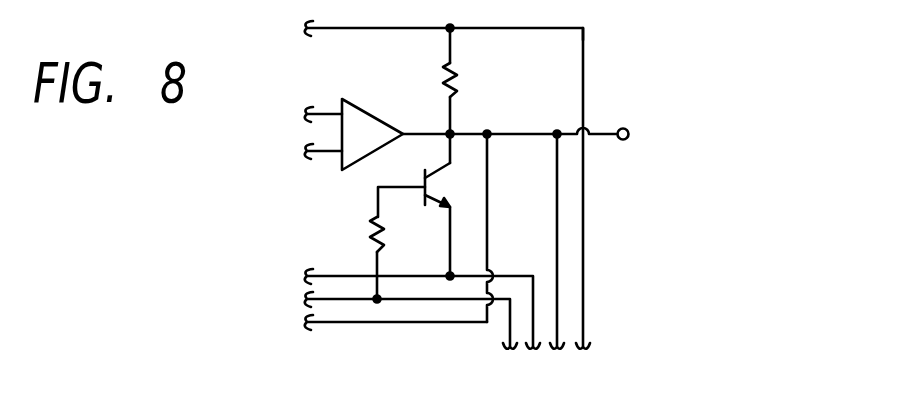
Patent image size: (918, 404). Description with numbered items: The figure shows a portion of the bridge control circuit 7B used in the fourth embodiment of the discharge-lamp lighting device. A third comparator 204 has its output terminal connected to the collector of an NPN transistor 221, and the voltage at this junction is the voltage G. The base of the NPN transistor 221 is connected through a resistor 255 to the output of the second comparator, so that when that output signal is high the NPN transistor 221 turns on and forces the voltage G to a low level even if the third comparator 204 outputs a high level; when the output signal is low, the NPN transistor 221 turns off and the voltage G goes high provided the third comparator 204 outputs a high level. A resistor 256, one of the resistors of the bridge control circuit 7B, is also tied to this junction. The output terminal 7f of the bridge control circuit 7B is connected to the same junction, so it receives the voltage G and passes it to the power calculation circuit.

The third comparator 204 is at (385, 120).
The resistor 256 is at (470, 81).
The resistor 255 is at (364, 236).
The NPN transistor 221 is at (423, 207).
The voltage G is at (455, 131).
The output terminal 7f is at (641, 135).
The bridge control circuit 7B is at (624, 54).